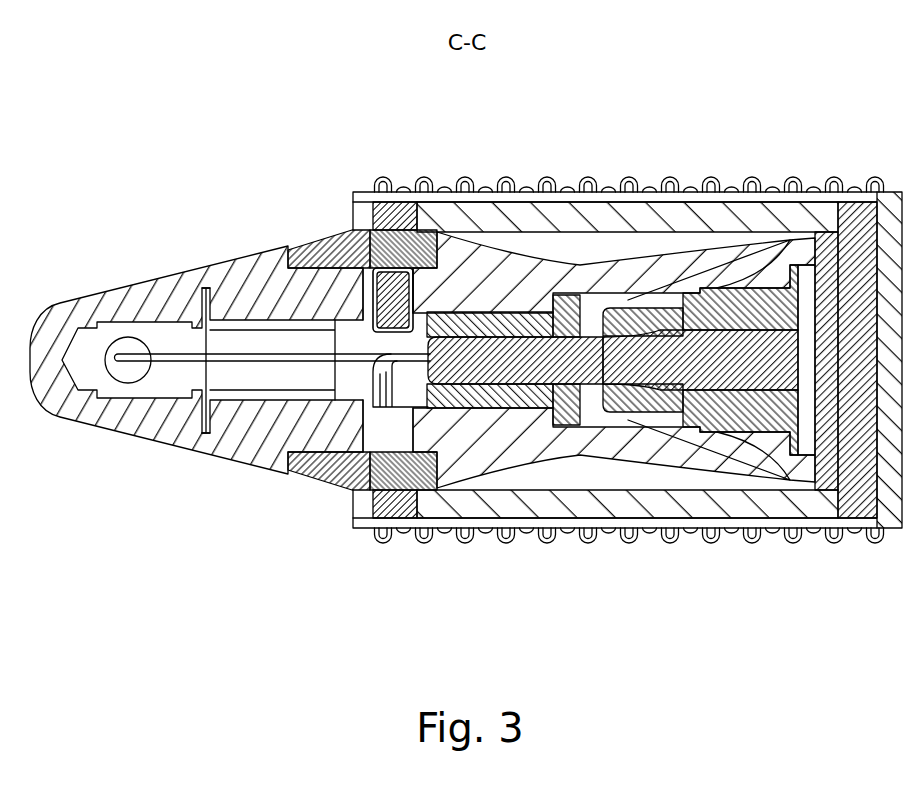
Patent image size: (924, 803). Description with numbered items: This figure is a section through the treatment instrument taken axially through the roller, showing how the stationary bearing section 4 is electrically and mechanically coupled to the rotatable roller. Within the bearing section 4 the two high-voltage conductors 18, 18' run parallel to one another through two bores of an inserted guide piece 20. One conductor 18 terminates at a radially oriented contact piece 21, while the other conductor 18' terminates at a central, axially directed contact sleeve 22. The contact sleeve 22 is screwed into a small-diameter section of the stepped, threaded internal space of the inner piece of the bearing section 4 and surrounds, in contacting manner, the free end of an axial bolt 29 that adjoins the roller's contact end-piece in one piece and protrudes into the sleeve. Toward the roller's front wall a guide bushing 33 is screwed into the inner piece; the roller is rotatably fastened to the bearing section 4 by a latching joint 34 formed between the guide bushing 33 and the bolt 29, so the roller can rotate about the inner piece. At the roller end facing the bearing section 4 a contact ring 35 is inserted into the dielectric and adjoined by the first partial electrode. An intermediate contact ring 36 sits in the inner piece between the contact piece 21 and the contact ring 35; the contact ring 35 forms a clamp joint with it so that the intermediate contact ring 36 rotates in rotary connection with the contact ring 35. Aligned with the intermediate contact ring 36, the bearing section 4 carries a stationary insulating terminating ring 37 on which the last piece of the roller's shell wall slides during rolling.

The bearing section 4 is at (179, 463).
The high-voltage conductor 18 is at (273, 466).
The high-voltage conductor 18' is at (319, 471).
The guide piece 20 is at (196, 333).
The contact piece 21 is at (368, 298).
The contact sleeve 22 is at (508, 386).
The bolt 29 is at (713, 352).
The guide bushing 33 is at (763, 412).
The latching joint 34 is at (652, 392).
The contact ring 35 is at (387, 220).
The intermediate contact ring 36 is at (425, 237).
The insulating terminating ring 37 is at (338, 467).